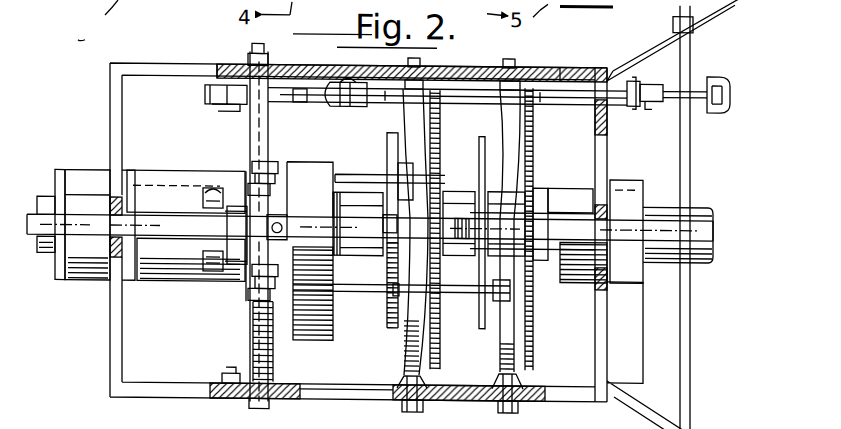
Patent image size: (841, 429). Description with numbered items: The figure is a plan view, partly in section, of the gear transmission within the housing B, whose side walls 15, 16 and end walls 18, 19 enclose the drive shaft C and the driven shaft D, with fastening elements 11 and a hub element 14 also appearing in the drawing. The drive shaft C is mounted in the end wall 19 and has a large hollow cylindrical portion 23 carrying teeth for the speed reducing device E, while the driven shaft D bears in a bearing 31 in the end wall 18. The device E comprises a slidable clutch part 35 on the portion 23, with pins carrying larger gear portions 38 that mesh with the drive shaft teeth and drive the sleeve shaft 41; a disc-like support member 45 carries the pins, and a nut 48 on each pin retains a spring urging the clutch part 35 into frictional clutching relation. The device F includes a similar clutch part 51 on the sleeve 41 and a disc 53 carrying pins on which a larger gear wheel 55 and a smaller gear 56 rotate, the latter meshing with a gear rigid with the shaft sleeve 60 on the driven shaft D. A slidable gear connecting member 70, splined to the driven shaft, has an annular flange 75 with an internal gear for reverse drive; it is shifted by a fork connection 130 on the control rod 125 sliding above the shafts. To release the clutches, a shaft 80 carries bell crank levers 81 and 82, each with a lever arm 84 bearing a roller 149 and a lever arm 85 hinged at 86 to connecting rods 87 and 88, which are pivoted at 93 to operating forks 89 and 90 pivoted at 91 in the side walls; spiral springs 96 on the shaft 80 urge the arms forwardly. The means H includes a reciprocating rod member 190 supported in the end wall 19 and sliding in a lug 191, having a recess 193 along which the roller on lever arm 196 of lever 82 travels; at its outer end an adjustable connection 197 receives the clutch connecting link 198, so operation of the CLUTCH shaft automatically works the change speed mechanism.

The fastening bolt for shifter arm 11 is at (424, 82).
The hub 14 is at (456, 221).
The side wall 15 is at (350, 398).
The side wall 16 is at (467, 67).
The end wall 18 is at (110, 354).
The end wall 19 is at (600, 155).
The hollow cylindrical portion 23 is at (582, 272).
The bearing 31 is at (60, 282).
The clutch part 35 is at (527, 176).
The larger gear portion 38 is at (522, 196).
The sleeve shaft 41 is at (464, 268).
The disc-like support member 45 is at (480, 318).
The nut 48 is at (212, 258).
The clutch part 51 is at (432, 140).
The disc 53 is at (387, 320).
The larger gear wheel 55 is at (438, 192).
The smaller gear 56 is at (392, 258).
The shaft sleeve 60 is at (354, 212).
The gear connecting member 70 is at (182, 262).
The annular flange 75 is at (318, 330).
The shaft 80 is at (266, 399).
The bell crank lever 81 is at (242, 282).
The bell crank lever 82 is at (256, 140).
The lever arm 84 is at (232, 187).
The lever arm 85 is at (280, 172).
The hinged connection 86 is at (272, 150).
The connecting rod 87 is at (346, 290).
The connecting rod 88 is at (346, 174).
The operating fork 89 is at (500, 348).
The operating fork 90 is at (406, 346).
The pivot 91 is at (425, 398).
The pivotal connection 93 is at (400, 158).
The spiral spring 96 is at (285, 352).
The control rod 125 is at (96, 222).
The fork connection 130 is at (290, 225).
The roller 149 is at (203, 258).
The reciprocating rod member 190 is at (566, 76).
The lug 191 is at (233, 106).
The recess 193 is at (355, 75).
The lever arm 196 is at (322, 96).
The adjustable connection 197 is at (646, 100).
The clutch connecting link 198 is at (727, 94).
The housing B is at (290, 226).
The drive shaft C is at (706, 260).
The driven shaft D is at (40, 255).
The speed reducing device E is at (512, 152).
The speed reducing device F is at (416, 172).
The means H is at (567, 56).
The clutch shaft CLUTCH is at (690, 46).